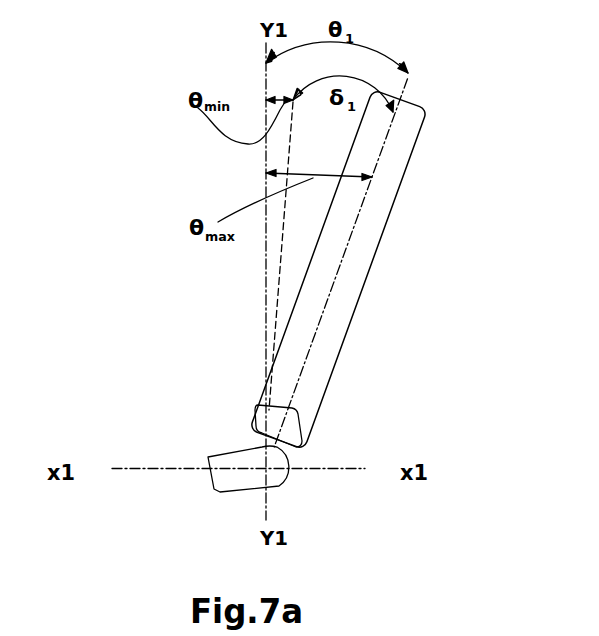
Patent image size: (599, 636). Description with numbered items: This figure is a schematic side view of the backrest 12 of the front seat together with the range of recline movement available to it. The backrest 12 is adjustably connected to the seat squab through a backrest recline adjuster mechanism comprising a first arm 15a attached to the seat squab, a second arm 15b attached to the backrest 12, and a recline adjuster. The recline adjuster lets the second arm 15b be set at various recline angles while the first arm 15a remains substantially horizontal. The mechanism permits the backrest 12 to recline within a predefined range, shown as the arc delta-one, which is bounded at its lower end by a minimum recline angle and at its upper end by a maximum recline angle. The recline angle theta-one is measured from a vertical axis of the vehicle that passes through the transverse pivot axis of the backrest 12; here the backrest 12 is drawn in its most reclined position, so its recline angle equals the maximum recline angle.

The backrest 12 is at (397, 195).
The first arm 15a is at (214, 489).
The second arm 15b is at (269, 418).